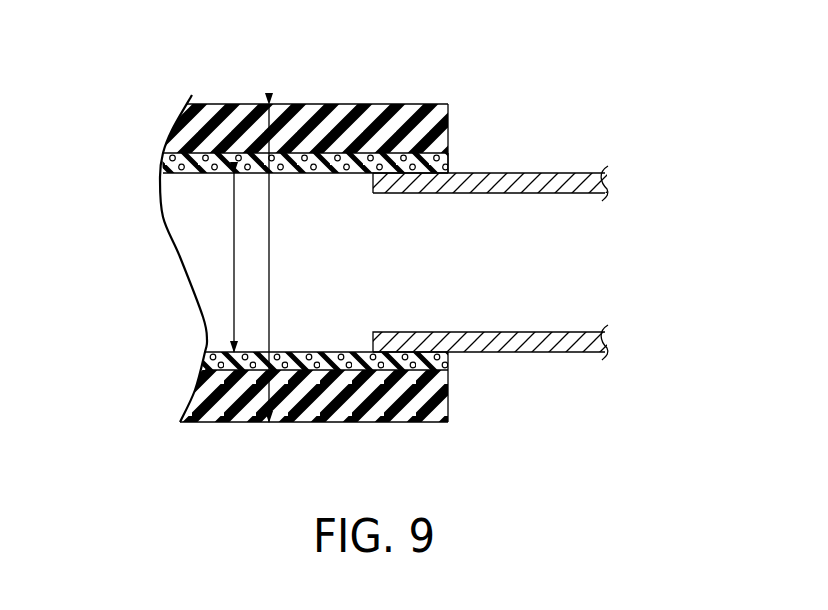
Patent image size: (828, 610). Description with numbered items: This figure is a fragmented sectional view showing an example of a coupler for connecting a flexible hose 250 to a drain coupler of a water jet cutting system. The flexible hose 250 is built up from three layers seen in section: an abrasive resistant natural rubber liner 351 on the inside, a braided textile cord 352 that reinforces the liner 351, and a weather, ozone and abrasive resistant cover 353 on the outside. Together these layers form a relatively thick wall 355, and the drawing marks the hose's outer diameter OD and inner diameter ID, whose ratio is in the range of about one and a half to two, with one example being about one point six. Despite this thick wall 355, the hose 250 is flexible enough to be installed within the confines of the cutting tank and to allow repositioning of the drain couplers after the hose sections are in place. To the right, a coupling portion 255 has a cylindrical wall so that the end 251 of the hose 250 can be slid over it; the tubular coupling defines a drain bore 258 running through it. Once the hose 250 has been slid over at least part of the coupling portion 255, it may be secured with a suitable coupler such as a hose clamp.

The flexible hose 250 is at (337, 249).
The end of hose 251 is at (450, 139).
The coupling portion 255 is at (532, 172).
The drain bore 258 is at (548, 332).
The natural rubber liner 351 is at (443, 160).
The braided textile cord 352 is at (371, 158).
The cover 353 is at (325, 103).
The thick wall 355 is at (437, 397).
The inner diameter ID is at (233, 262).
The outer diameter OD is at (270, 224).